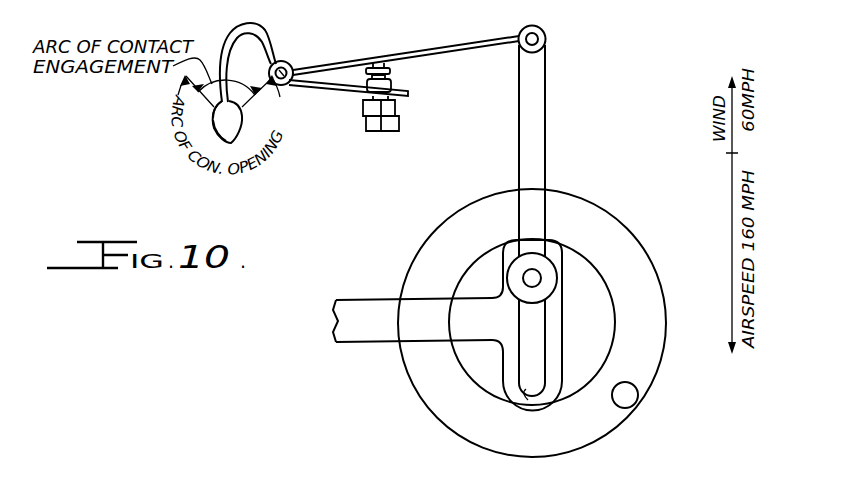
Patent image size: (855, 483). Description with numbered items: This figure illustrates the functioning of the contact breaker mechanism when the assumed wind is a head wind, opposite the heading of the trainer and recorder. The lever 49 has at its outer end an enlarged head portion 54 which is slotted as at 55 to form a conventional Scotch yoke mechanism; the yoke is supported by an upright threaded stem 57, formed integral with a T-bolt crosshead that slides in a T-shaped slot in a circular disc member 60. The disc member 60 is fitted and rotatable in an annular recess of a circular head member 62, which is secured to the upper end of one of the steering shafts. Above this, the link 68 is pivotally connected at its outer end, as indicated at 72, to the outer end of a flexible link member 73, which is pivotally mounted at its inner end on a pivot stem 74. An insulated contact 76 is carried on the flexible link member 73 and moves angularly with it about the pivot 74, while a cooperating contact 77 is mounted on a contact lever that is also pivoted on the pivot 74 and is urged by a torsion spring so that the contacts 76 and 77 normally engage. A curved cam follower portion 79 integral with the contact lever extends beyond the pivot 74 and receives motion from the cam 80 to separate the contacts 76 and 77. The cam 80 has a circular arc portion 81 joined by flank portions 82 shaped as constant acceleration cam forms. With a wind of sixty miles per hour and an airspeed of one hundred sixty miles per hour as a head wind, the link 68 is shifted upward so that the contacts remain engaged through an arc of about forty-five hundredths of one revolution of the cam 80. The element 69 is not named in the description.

The lever 49 is at (362, 284).
The enlarged head portion 54 is at (561, 340).
The slot 55 is at (528, 400).
The upright threaded stem 57 is at (523, 278).
The circular disc member 60 is at (605, 310).
The circular head member 62 is at (660, 332).
The link 68 is at (536, 108).
The pivot bearing 69 is at (556, 280).
The pivotal connection 72 is at (546, 38).
The flexible link member 73 is at (477, 44).
The pivot stem 74 is at (289, 62).
The insulated contact 76 is at (390, 71).
The cooperating contact 77 is at (402, 93).
The curved cam follower portion 79 is at (239, 28).
The cam 80 is at (234, 121).
The circular arc portion 81 is at (214, 110).
The flank portions 82 is at (216, 132).